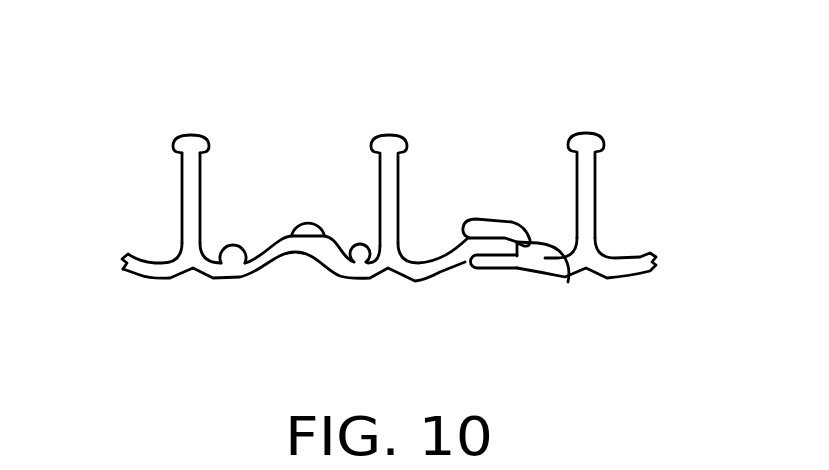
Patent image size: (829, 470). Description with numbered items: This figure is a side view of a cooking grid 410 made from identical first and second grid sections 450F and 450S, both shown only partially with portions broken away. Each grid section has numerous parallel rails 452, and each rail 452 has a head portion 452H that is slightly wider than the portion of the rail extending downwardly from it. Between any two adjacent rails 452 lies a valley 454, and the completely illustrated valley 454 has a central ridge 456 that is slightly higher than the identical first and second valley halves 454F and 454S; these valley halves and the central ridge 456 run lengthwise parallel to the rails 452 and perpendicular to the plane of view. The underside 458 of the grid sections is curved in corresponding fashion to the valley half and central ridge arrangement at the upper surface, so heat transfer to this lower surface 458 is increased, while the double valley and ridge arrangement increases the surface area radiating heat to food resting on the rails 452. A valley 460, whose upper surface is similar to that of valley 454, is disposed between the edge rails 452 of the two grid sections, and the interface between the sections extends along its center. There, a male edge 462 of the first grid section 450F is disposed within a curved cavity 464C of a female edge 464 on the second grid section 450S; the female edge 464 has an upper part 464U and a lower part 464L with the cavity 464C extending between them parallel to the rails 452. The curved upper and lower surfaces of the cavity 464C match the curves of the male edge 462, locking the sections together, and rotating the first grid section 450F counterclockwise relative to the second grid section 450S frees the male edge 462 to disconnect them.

The cooking grid 410 is at (394, 207).
The first grid section 450F is at (202, 167).
The second grid section 450S is at (620, 258).
The rail 452 is at (337, 153).
The head portion 452H is at (177, 148).
The valley 454 is at (288, 175).
The first valley half 454F is at (244, 266).
The second valley half 454S is at (368, 262).
The central ridge 456 is at (322, 245).
The underside 458 is at (222, 278).
The valley 460 is at (555, 205).
The male edge 462 is at (505, 270).
The female edge 464 is at (506, 244).
The upper part 464U is at (513, 220).
The lower part 464L is at (485, 277).
The curved cavity 464C is at (540, 243).